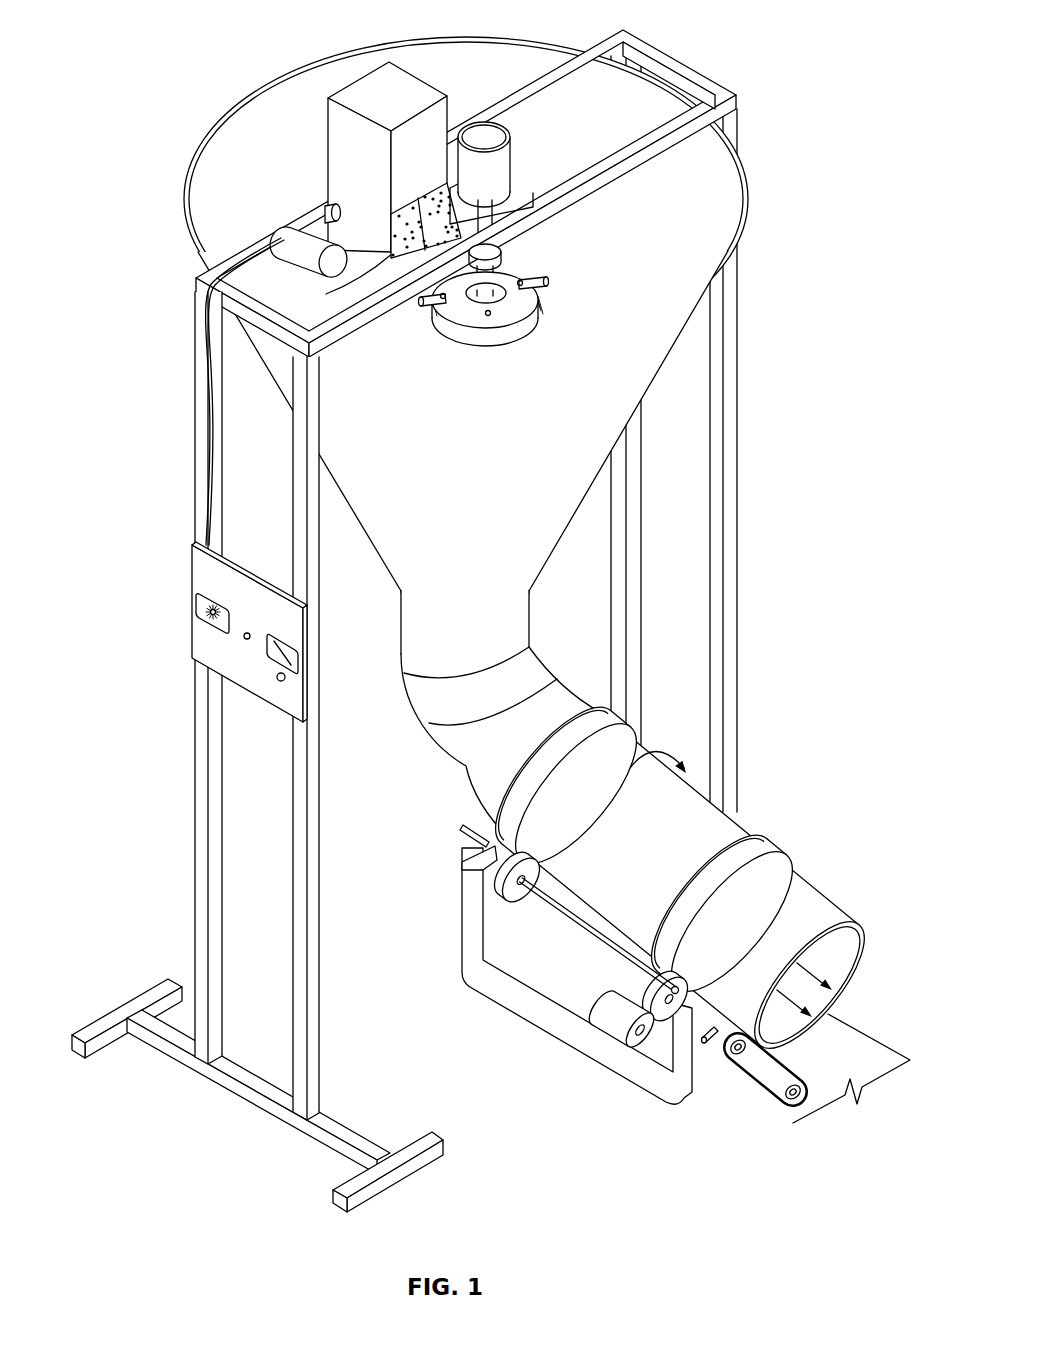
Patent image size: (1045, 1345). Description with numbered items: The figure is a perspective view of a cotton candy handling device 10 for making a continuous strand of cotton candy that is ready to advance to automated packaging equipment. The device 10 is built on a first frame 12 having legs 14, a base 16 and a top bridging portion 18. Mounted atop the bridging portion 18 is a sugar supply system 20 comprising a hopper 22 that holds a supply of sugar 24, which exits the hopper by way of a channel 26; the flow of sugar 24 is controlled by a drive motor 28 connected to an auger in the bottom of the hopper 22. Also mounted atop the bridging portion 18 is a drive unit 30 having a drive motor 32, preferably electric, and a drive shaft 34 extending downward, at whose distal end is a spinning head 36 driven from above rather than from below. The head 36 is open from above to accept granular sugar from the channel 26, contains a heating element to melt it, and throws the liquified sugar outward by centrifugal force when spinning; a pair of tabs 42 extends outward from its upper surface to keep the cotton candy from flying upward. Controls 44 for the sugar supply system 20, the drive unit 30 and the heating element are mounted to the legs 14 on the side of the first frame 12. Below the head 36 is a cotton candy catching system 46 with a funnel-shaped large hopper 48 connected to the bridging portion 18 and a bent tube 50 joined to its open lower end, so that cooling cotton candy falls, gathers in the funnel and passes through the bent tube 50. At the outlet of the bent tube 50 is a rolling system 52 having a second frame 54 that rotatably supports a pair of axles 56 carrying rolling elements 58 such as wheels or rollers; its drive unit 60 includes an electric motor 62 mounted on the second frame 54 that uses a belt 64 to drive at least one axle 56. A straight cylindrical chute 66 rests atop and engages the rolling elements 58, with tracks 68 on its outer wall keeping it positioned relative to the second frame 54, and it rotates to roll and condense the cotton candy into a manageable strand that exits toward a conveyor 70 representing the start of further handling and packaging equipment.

The cotton candy handling device 10 is at (126, 73).
The first frame 12 is at (186, 838).
The legs 14 is at (201, 766).
The base 16 is at (246, 1096).
The top bridging portion 18 is at (612, 44).
The sugar supply system 20 is at (224, 196).
The hopper 22 is at (401, 84).
The sugar 24 is at (393, 210).
The channel 26 is at (351, 277).
The drive motor 28 is at (288, 243).
The drive unit 30 is at (565, 166).
The drive motor 32 is at (502, 152).
The drive shaft 34 is at (500, 286).
The spinning head 36 is at (512, 308).
The tabs 42 is at (548, 283).
The controls 44 is at (183, 605).
The cotton candy catching system 46 is at (585, 579).
The large hopper 48 is at (626, 383).
The bent tube 50 is at (520, 618).
The rolling system 52 is at (452, 847).
The second frame 54 is at (471, 960).
The axles 56 is at (561, 916).
The rolling elements 58 is at (496, 878).
The drive unit 60 is at (606, 1049).
The electric motor 62 is at (610, 1020).
The belt 64 is at (695, 1047).
The straight cylindrical chute 66 is at (703, 813).
The tracks 68 is at (612, 716).
The conveyor 70 is at (860, 1042).